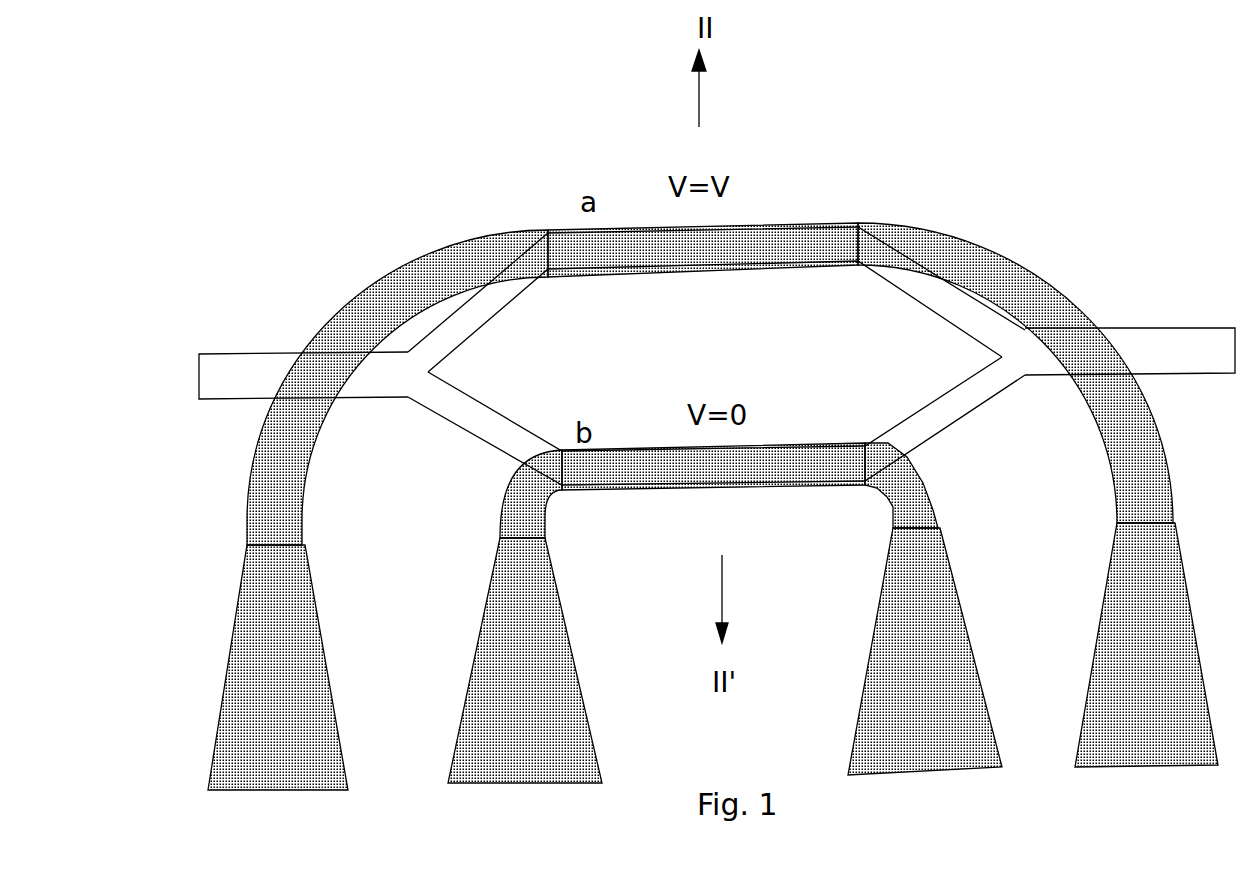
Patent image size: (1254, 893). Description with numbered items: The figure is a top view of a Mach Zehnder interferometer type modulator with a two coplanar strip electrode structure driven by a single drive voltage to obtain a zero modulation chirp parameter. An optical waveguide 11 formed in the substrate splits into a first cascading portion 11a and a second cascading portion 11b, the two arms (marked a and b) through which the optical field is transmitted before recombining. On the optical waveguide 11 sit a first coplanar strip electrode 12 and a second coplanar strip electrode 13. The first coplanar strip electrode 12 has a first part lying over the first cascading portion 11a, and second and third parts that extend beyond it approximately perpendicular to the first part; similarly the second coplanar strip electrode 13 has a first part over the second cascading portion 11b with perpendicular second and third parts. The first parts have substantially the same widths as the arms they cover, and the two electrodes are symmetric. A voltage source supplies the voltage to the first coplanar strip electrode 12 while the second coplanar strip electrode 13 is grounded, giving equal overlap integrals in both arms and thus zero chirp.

The optical waveguide 11 is at (222, 383).
The first cascading portion 11a is at (472, 320).
The second cascading portion 11b is at (463, 408).
The first coplanar strip electrode 12 is at (808, 223).
The second coplanar strip electrode 13 is at (787, 463).